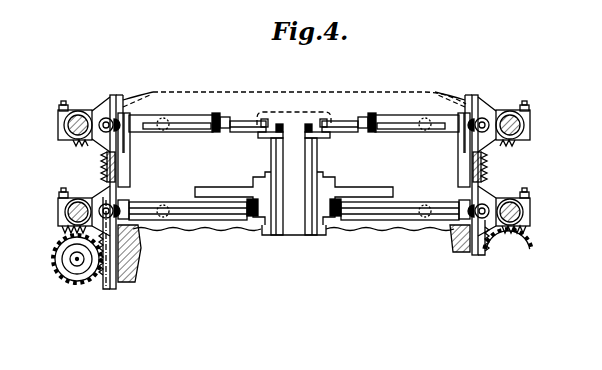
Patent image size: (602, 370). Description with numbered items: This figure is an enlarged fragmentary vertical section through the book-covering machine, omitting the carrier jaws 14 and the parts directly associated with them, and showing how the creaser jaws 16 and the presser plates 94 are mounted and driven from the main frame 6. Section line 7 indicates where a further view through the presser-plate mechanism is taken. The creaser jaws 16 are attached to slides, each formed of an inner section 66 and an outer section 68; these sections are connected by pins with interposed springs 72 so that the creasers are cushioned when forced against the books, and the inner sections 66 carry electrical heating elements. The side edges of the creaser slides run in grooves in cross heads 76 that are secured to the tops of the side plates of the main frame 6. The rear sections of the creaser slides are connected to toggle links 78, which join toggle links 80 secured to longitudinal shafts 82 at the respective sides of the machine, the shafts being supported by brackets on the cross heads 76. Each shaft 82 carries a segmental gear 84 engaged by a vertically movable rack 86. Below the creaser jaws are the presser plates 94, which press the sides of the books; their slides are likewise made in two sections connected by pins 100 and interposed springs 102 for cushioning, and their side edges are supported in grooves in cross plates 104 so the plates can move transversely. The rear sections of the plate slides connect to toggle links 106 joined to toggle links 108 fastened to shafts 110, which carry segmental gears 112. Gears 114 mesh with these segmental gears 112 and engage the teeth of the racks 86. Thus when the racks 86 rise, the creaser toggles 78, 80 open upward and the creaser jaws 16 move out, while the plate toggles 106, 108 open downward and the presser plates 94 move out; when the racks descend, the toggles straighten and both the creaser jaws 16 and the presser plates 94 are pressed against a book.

The main frame 6 is at (45, 122).
The section line 7- 7 is at (56, 202).
The carrier jaws 14 is at (294, 186).
The creaser jaws 16 is at (306, 133).
The inner section of creaser slide 66 is at (250, 121).
The outer section of creaser slide 68 is at (193, 114).
The spring 72 is at (217, 113).
The cross head 76 is at (420, 91).
The toggle link 78 is at (153, 90).
The toggle link 80 is at (90, 111).
The shaft 82 is at (77, 111).
The segmental gear 84 is at (78, 146).
The rack 86 is at (100, 168).
The presser plate 94 is at (271, 168).
The pin 100 is at (250, 218).
The spring 102 is at (336, 218).
The cross plate 104 is at (185, 229).
The toggle link 106 is at (165, 205).
The toggle link 108 is at (102, 190).
The shaft 110 is at (60, 211).
The segmental gear 112 is at (62, 229).
The gear 114 is at (50, 266).